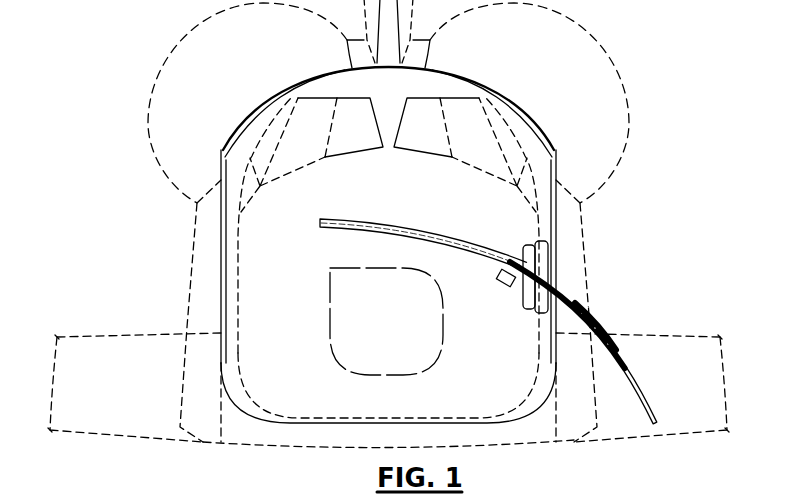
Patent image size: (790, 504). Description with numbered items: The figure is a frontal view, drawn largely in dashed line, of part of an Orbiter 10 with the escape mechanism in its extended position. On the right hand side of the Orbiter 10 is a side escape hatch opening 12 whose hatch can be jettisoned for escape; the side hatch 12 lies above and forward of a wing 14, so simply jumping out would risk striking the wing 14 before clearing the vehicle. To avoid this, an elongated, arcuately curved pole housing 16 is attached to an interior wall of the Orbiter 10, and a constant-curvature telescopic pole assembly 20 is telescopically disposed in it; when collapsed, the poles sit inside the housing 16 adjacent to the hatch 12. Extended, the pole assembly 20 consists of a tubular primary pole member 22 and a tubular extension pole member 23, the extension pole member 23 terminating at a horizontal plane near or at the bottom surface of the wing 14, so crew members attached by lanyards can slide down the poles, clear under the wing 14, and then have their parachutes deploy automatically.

The Orbiter 10 is at (481, 387).
The side escape hatch opening 12 is at (555, 257).
The wing 14 is at (645, 331).
The pole housing 16 is at (437, 224).
The telescopic pole assembly 20 is at (594, 318).
The primary pole member 22 is at (574, 301).
The extension pole member 23 is at (649, 391).